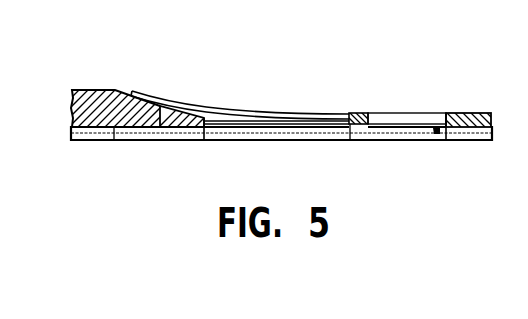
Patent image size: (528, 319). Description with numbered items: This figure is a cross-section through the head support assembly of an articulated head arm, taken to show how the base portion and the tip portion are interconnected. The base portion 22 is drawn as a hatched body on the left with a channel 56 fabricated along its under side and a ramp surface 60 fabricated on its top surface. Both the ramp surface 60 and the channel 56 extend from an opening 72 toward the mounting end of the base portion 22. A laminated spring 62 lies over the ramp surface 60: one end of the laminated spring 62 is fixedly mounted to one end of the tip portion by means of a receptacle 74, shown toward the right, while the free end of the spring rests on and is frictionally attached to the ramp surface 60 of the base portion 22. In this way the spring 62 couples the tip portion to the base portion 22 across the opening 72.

The base portion 22 is at (99, 89).
The channel 56 is at (114, 141).
The ramp surface 60 is at (155, 128).
The laminated spring 62 is at (170, 104).
The opening 72 is at (254, 128).
The receptacle 74 is at (367, 108).